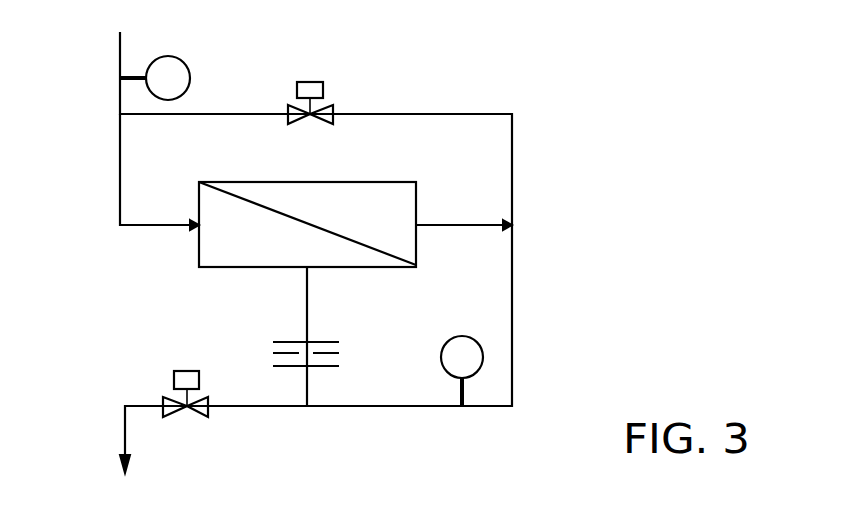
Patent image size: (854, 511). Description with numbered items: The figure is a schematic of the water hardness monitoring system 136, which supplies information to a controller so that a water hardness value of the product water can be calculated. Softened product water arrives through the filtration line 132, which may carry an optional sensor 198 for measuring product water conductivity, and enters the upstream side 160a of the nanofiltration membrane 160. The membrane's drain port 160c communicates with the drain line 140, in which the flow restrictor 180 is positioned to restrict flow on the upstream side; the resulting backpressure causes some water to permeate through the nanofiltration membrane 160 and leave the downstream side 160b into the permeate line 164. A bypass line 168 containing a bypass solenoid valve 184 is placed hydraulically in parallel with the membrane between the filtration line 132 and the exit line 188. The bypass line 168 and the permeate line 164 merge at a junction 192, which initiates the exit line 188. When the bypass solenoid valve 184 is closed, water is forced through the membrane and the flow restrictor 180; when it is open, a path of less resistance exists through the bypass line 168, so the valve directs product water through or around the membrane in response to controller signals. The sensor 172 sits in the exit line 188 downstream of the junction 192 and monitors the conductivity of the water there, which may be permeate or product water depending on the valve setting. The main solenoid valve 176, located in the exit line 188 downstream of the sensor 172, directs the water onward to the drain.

The filtration line 132 is at (117, 152).
The water hardness monitoring system 136 is at (630, 161).
The drain line 140 is at (305, 303).
The nanofiltration membrane 160 is at (298, 176).
The upstream side 160a is at (198, 230).
The downstream side 160b is at (418, 222).
The drain port 160c is at (313, 271).
The permeate line 164 is at (472, 227).
The bypass line 168 is at (435, 110).
The sensor 172 is at (462, 313).
The main solenoid valve 176 is at (187, 371).
The flow restrictor 180 is at (345, 362).
The bypass solenoid valve 184 is at (308, 78).
The exit line 188 is at (127, 439).
The junction 192 is at (514, 225).
The sensor 198 is at (168, 56).